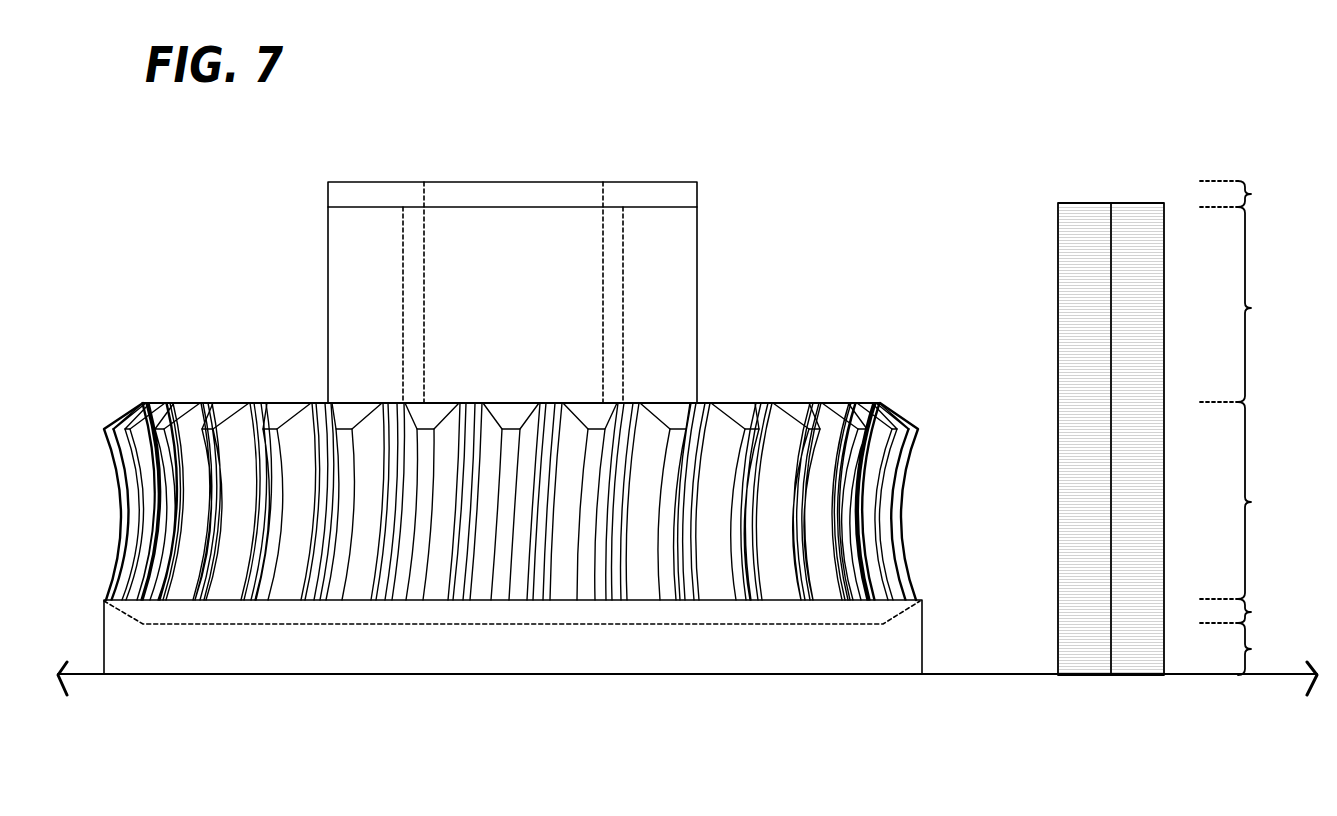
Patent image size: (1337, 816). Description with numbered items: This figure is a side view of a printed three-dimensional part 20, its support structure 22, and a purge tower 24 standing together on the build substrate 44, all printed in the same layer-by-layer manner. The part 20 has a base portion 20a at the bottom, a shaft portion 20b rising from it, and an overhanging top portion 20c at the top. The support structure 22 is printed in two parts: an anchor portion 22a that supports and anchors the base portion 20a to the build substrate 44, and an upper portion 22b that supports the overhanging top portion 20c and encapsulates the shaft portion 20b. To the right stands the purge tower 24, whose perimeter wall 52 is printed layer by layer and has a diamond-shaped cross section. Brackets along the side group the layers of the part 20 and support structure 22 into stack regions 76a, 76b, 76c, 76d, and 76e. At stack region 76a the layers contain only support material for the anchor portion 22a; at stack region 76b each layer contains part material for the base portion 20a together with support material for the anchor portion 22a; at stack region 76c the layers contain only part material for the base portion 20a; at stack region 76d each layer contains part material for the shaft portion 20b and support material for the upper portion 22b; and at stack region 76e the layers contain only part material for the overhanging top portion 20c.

The 3D part 20 is at (512, 372).
The base portion 20a is at (838, 403).
The shaft portion 20b is at (623, 254).
The overhanging top portion 20c is at (672, 190).
The support structure 22 is at (552, 427).
The anchor portion 22a is at (780, 657).
The upper portion 22b is at (343, 292).
The purge tower 24 is at (1063, 379).
The build substrate 44 is at (978, 674).
The perimeter wall 52 is at (1080, 293).
The stack region 76a is at (1269, 649).
The stack region 76b is at (1250, 612).
The stack region 76c is at (1249, 500).
The stack region 76d is at (1250, 304).
The stack region 76e is at (1250, 194).